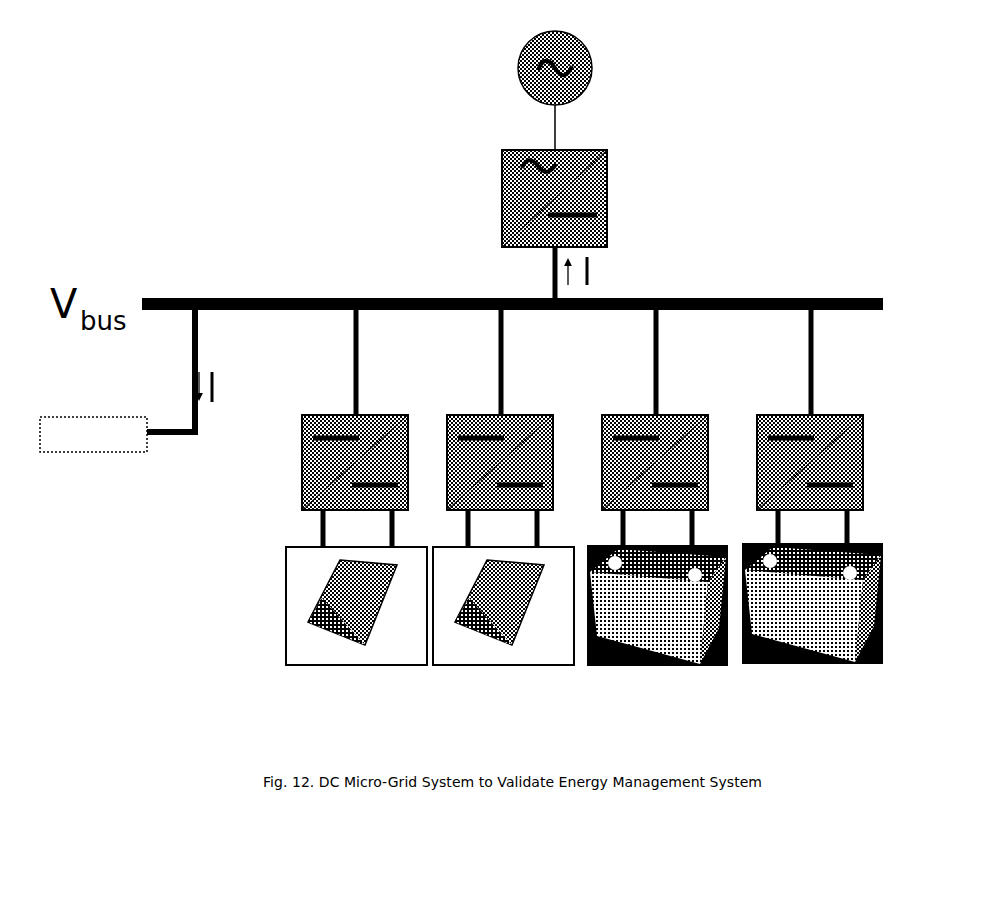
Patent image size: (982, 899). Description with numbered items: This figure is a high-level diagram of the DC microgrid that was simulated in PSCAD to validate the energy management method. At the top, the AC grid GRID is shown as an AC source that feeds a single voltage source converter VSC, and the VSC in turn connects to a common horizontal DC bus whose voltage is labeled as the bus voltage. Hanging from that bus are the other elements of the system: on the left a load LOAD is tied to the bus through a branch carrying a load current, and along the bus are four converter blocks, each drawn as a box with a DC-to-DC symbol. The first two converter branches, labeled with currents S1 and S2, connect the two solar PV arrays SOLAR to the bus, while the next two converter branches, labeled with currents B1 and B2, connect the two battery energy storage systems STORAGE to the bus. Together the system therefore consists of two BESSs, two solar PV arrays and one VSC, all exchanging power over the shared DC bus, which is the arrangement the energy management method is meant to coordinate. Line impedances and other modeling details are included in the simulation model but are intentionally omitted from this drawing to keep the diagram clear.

The AC grid source GRID is at (555, 75).
The element VSC is at (587, 211).
The load LOAD is at (161, 382).
The solar converter 1 S1 is at (377, 352).
The solar converter 2 S2 is at (502, 428).
The battery converter 1 B1 is at (662, 428).
The battery converter 2 B2 is at (818, 428).
The solar PV arrays SOLAR is at (430, 628).
The BESSs STORAGE is at (735, 626).